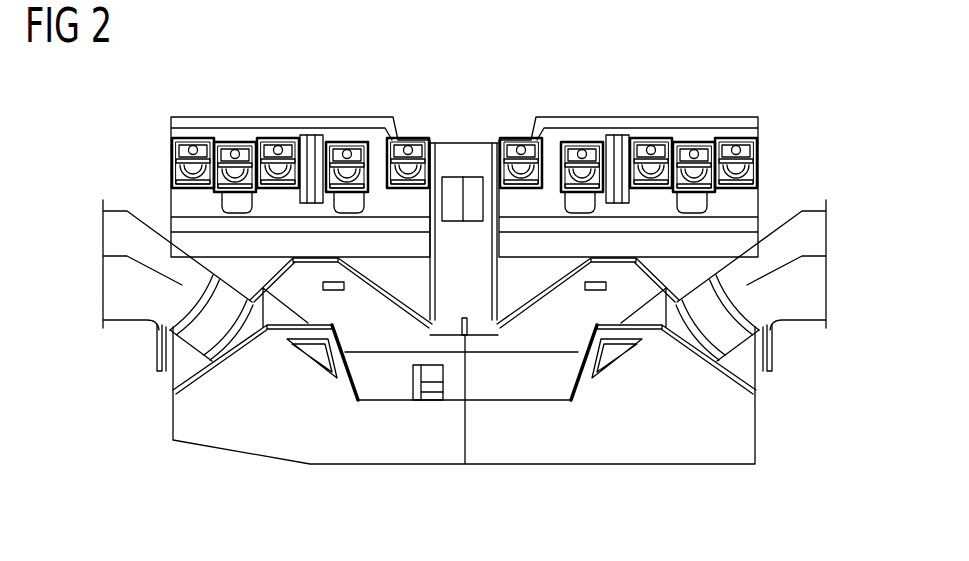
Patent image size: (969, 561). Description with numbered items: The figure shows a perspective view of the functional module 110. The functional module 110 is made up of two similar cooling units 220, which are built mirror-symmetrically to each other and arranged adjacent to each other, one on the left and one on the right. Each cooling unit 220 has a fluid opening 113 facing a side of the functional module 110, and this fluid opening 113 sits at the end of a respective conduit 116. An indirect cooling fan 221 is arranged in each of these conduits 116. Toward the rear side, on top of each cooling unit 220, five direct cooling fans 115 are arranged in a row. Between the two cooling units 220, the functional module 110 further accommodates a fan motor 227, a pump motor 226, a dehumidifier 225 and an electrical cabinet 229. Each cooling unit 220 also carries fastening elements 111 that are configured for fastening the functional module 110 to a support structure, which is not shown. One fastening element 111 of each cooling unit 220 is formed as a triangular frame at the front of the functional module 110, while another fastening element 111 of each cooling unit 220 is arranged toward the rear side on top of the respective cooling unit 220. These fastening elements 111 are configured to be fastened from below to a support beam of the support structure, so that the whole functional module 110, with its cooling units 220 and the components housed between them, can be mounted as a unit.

The functional module 110 is at (710, 92).
The fastening element 111 is at (322, 142).
The fluid opening 113 is at (100, 278).
The direct cooling fan 115 is at (222, 182).
The conduit 116 is at (123, 312).
The cooling unit 220 is at (240, 452).
The indirect cooling fan 221 is at (205, 340).
The dehumidifier 225 is at (432, 374).
The pump motor 226 is at (472, 233).
The fan motor 227 is at (370, 318).
The electrical cabinet 229 is at (460, 166).